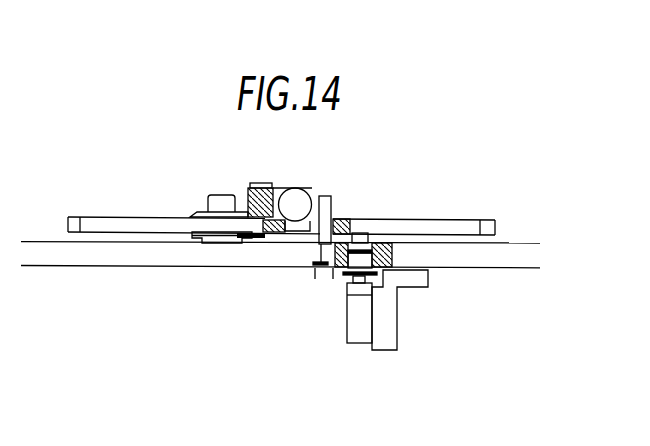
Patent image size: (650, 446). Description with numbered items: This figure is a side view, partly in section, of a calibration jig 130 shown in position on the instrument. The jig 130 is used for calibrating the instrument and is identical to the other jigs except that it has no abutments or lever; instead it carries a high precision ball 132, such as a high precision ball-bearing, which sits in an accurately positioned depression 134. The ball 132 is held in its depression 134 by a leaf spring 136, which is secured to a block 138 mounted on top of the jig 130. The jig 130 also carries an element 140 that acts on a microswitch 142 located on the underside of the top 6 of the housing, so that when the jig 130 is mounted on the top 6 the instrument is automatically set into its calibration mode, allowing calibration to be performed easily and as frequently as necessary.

The top of the housing 6 is at (507, 248).
The jig 130 is at (444, 215).
The high precision ball 132 is at (305, 200).
The depression 134 is at (289, 225).
The leaf spring 136 is at (282, 187).
The block 138 is at (247, 205).
The element 140 is at (362, 232).
The microswitch 142 is at (353, 285).